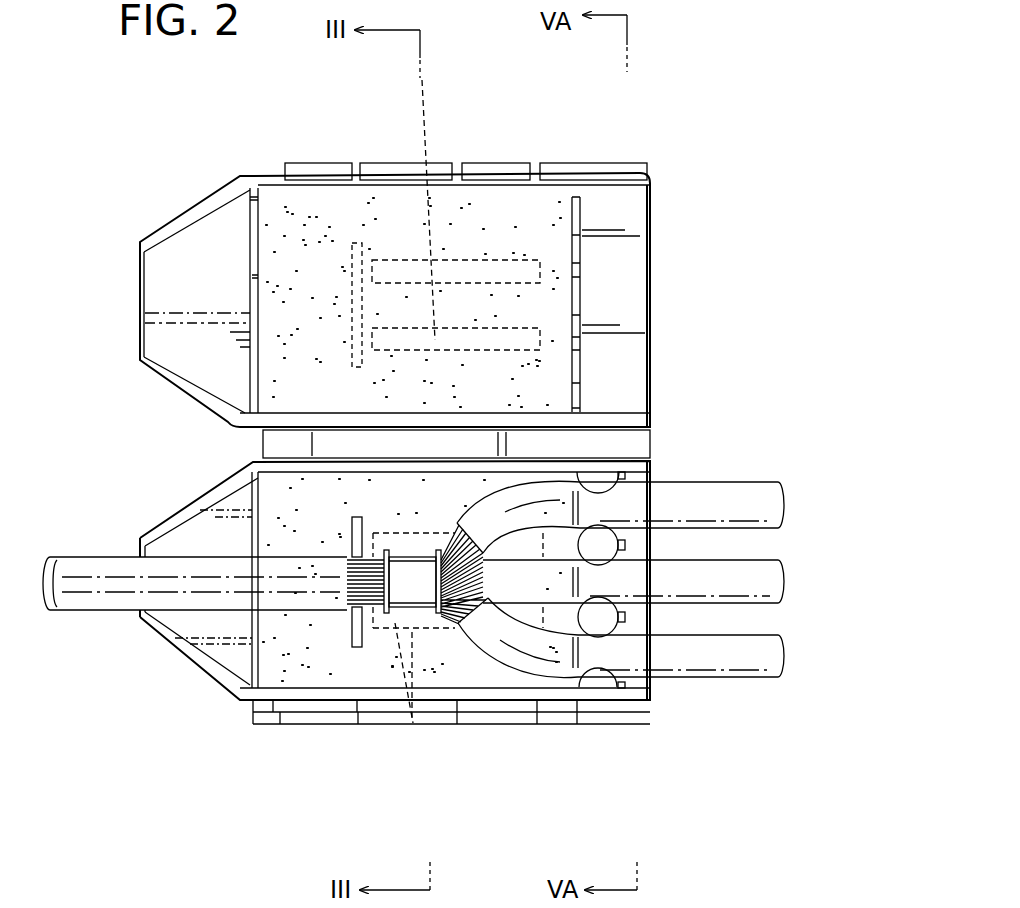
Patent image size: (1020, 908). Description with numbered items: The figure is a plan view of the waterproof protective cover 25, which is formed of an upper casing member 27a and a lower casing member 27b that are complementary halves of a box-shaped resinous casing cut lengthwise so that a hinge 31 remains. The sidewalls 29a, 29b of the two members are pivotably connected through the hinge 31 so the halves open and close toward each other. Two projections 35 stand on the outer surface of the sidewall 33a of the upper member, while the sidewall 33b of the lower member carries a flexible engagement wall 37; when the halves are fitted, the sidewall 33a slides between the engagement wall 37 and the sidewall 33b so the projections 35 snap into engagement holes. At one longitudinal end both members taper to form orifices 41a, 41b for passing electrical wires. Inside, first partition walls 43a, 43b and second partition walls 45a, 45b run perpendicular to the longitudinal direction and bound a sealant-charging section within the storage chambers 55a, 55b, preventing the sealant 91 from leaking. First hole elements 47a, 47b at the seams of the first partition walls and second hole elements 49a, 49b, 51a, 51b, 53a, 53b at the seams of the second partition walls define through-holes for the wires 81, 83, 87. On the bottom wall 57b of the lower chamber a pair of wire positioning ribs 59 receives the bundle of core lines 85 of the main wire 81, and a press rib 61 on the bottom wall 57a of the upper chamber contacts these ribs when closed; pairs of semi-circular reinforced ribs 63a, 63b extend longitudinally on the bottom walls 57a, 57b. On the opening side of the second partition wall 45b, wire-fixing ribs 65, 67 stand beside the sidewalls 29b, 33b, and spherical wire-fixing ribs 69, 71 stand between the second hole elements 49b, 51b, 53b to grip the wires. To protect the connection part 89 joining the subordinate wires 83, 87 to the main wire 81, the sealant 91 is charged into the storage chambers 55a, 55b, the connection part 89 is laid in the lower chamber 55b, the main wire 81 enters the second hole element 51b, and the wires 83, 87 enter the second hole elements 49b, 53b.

The waterproof protective cover 25 is at (145, 118).
The upper casing member 27a is at (632, 220).
The lower casing member 27b is at (650, 683).
The sidewall 29a is at (655, 420).
The sidewall 29b is at (645, 467).
The hinge 31 is at (650, 442).
The sidewall 33a is at (652, 172).
The sidewall 33b is at (650, 722).
The projections 35 is at (306, 165).
The flexible engagement wall 37 is at (622, 718).
The orifice 41a is at (152, 273).
The orifice 41b is at (145, 612).
The first partition wall 43a is at (253, 212).
The first partition wall 43b is at (253, 665).
The second partition wall 45a is at (580, 197).
The second partition wall 45b is at (575, 683).
The first hole element 47a is at (257, 282).
The first hole element 47b is at (255, 610).
The second hole element 49a is at (581, 383).
The second hole element 49b is at (580, 528).
The second hole element 51a is at (581, 315).
The second hole element 51b is at (582, 602).
The second hole element 53a is at (582, 255).
The second hole element 53b is at (582, 673).
The storage chamber 55a is at (538, 218).
The storage chamber 55b is at (290, 655).
The bottom wall 57a is at (392, 215).
The bottom wall 57b is at (330, 667).
The wire positioning ribs 59 is at (352, 527).
The press rib 61 is at (352, 243).
The reinforced ribs 63a is at (418, 263).
The reinforced ribs 63b is at (413, 723).
The wire-fixing rib 65 is at (600, 470).
The wire-fixing rib 67 is at (598, 687).
The spherical wire-fixing rib 69 is at (574, 560).
The spherical wire-fixing rib 71 is at (573, 634).
The wire 81 is at (80, 565).
The wire 83 is at (765, 512).
The bundle of core lines 85 is at (352, 530).
The wire 87 is at (765, 652).
The connection part 89 is at (397, 563).
The sealant 91 is at (283, 368).